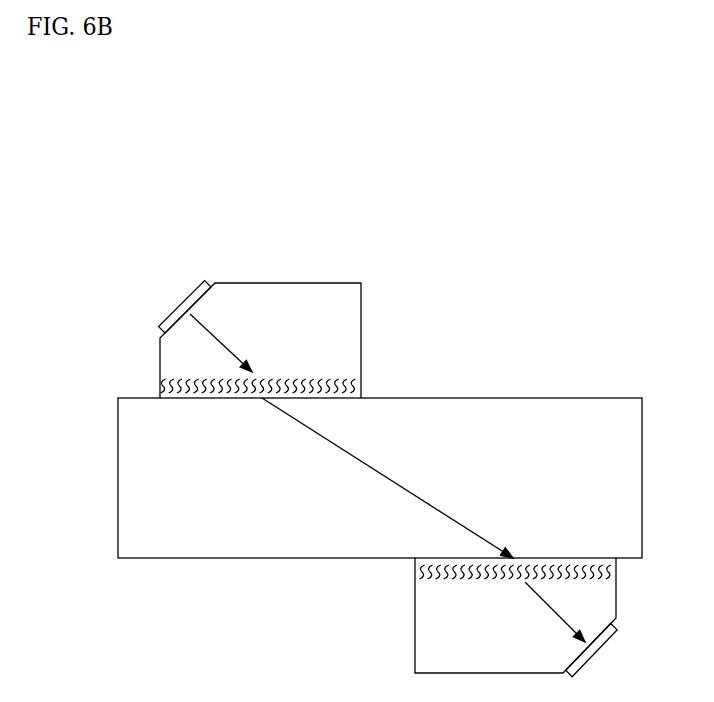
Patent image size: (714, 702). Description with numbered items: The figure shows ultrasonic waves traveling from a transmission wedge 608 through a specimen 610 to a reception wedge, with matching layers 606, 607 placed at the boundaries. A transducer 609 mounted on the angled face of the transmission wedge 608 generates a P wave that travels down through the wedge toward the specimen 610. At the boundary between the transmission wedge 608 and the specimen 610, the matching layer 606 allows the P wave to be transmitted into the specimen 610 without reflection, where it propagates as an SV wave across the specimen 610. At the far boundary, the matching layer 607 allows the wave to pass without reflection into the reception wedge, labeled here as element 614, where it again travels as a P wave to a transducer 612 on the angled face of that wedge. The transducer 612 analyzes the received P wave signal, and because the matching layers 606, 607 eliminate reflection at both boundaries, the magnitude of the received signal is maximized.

The matching layer 606 is at (163, 387).
The matching layer 607 is at (416, 571).
The transmission wedge 608 is at (160, 356).
The transducer 609 is at (172, 313).
The specimen 610 is at (118, 472).
The transducer 612 is at (607, 643).
The second wedge 614 is at (415, 640).